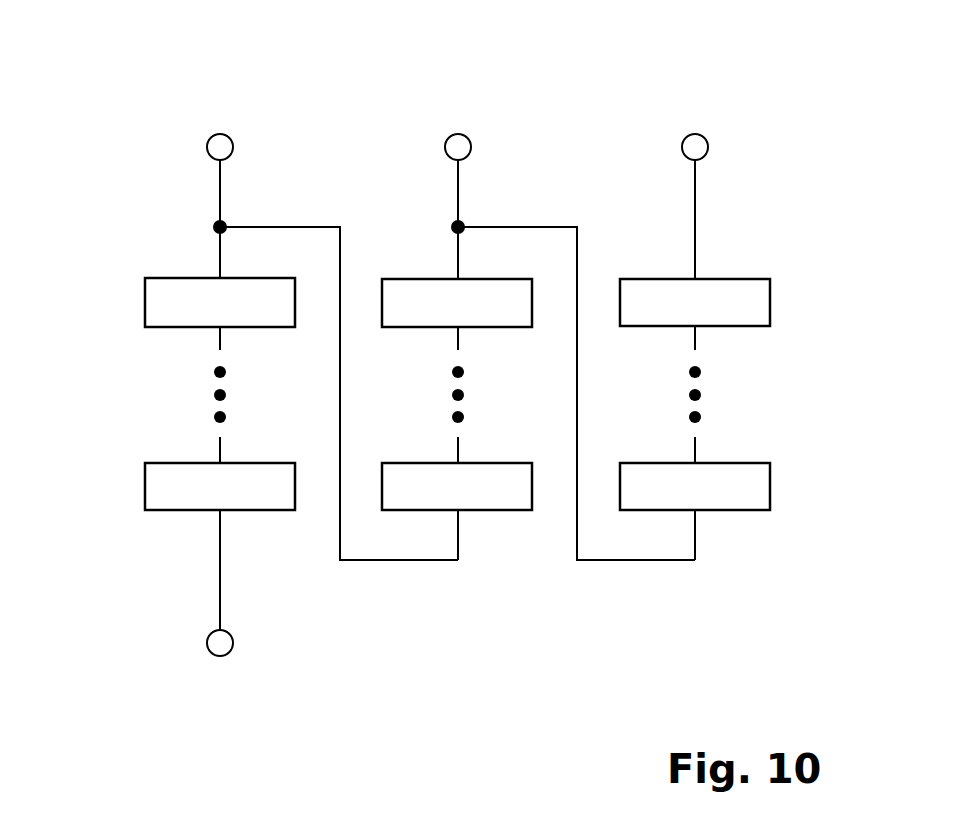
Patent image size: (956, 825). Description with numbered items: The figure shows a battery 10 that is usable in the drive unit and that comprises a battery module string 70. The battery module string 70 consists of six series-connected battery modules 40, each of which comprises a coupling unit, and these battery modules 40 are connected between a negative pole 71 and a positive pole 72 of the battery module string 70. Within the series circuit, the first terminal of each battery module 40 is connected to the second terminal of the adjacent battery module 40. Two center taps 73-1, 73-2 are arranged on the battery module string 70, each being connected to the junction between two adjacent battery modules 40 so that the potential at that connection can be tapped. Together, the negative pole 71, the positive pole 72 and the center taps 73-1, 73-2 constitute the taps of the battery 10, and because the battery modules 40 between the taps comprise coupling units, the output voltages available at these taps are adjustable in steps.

The battery 10 is at (118, 120).
The battery module 40 is at (145, 300).
The battery module string 70 is at (633, 560).
The negative pole 71 is at (234, 643).
The positive pole 72 is at (709, 147).
The center tap 73-1 is at (234, 147).
The center tap 73-2 is at (472, 147).